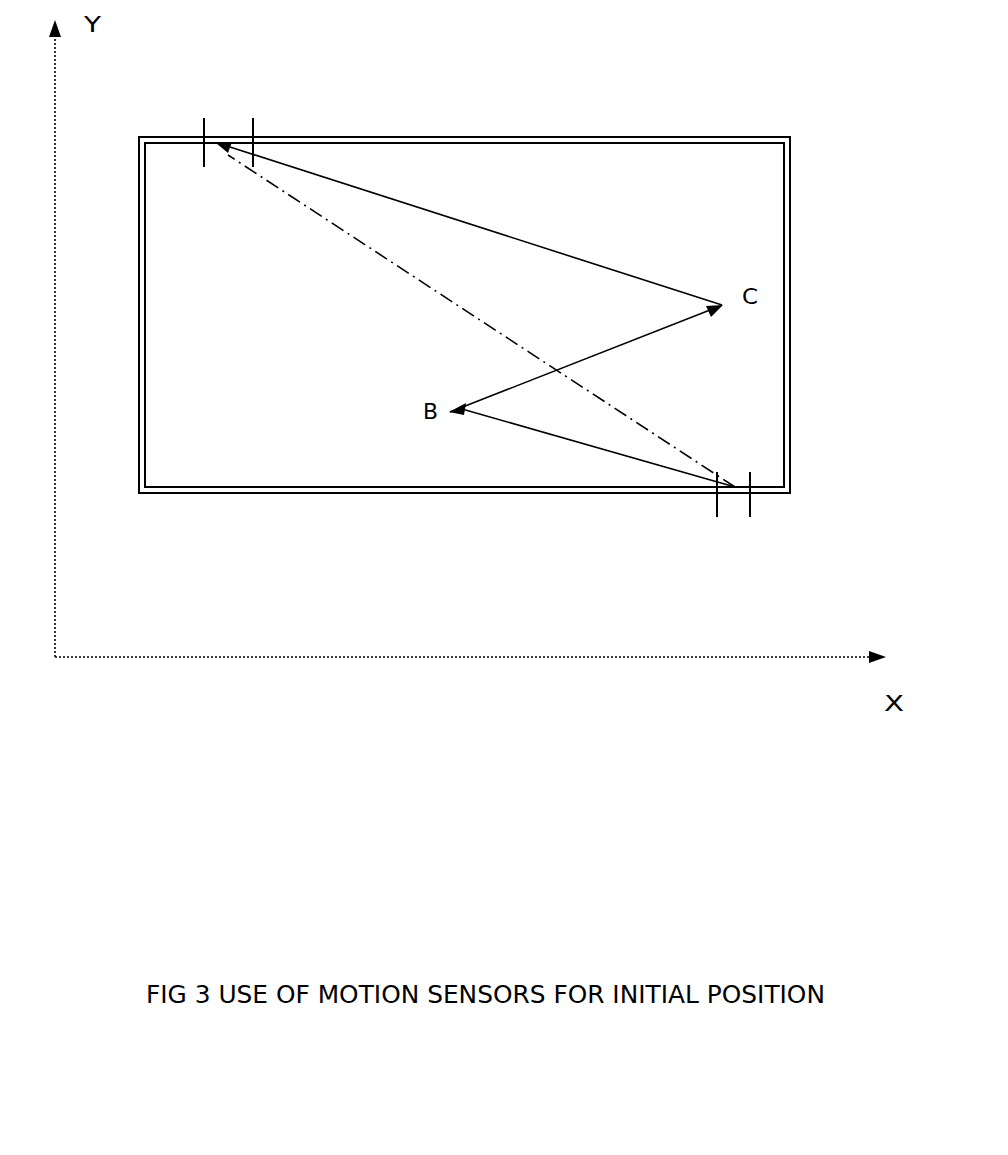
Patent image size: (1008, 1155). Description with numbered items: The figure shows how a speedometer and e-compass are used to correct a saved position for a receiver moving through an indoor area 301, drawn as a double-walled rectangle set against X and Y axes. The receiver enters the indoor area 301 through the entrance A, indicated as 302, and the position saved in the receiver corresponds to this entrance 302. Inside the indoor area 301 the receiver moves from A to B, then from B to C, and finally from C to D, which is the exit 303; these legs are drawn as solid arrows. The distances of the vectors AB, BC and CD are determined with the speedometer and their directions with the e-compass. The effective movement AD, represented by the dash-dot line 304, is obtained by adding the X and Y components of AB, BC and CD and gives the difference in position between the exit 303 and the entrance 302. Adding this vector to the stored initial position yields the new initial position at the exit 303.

The indoor area 301 is at (603, 138).
The entrance A 302 is at (733, 492).
The exit D 303 is at (222, 137).
The effective movement AD 304 is at (370, 248).